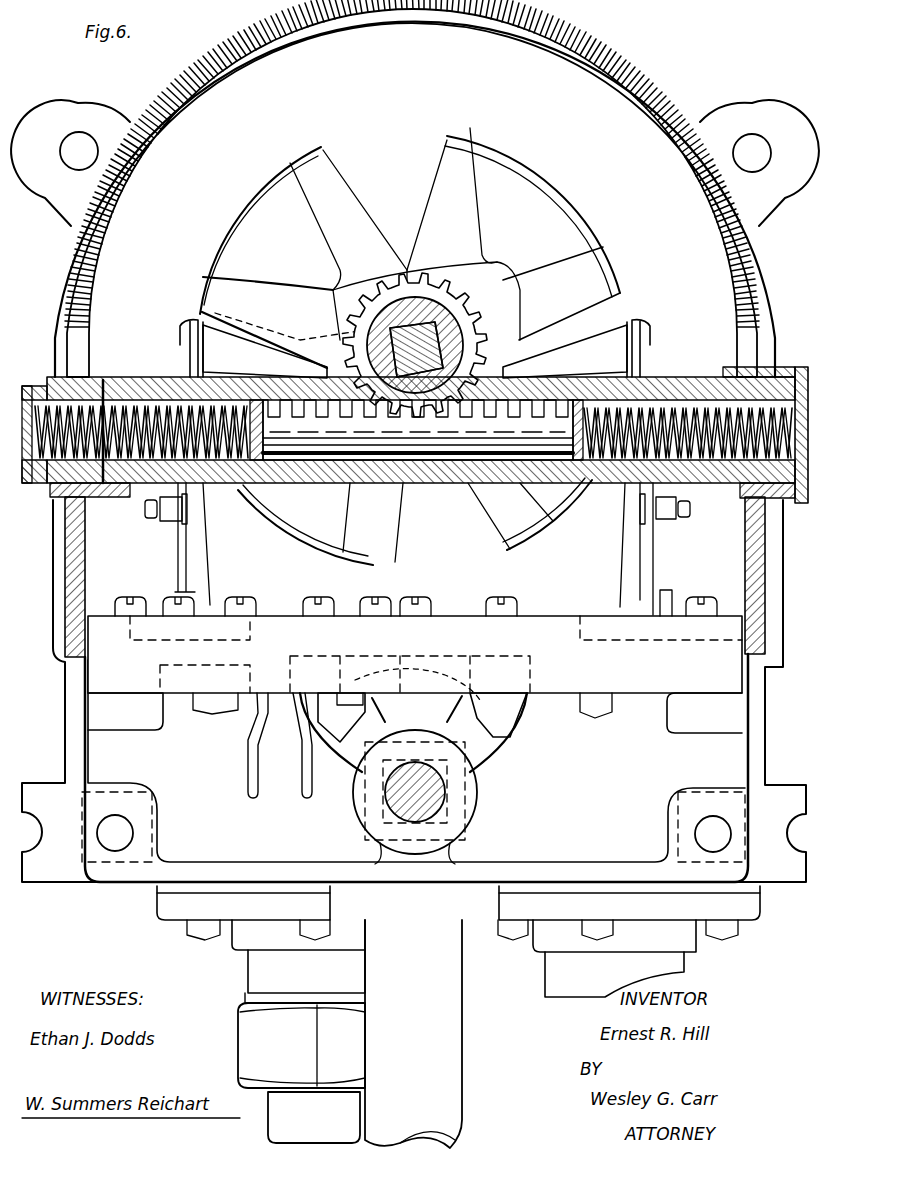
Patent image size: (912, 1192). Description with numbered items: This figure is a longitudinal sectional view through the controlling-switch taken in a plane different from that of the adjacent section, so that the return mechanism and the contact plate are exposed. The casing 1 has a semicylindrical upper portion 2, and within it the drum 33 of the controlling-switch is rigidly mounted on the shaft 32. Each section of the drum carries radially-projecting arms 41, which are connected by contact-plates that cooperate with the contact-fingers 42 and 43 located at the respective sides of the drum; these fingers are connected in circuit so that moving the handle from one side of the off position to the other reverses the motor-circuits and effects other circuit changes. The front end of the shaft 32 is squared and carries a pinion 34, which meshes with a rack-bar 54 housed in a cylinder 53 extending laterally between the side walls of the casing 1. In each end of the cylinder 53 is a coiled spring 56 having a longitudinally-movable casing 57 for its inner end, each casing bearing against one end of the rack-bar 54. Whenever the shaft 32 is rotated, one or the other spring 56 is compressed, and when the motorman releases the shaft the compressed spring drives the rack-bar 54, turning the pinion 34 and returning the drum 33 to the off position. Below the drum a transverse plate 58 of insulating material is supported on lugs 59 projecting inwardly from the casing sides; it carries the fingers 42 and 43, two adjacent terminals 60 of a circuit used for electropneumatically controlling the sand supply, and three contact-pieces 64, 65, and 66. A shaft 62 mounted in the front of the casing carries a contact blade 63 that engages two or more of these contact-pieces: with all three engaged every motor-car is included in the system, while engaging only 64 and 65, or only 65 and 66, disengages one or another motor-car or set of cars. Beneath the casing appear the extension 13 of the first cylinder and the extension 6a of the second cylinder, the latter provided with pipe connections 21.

The casing 1 is at (414, 815).
The semicylindrical upper portion 2 is at (415, 188).
The shaft 32 is at (406, 266).
The drum 33 is at (426, 301).
The pinion 34 is at (452, 322).
The radially-projecting arms 41 is at (410, 346).
The contact-finger 42 is at (238, 333).
The contact-finger 43 is at (587, 349).
The cylinder 53 is at (415, 438).
The rack-bar 54 is at (418, 430).
The coiled spring 56 is at (700, 382).
The longitudinally-movable casing 57 is at (150, 366).
The transverse plate 58 is at (415, 654).
The lugs 59 is at (415, 713).
The terminals 60 is at (302, 762).
The shaft 62 is at (447, 800).
The contact arm or blade 63 is at (413, 732).
The contact-piece 64 is at (341, 717).
The contact-piece 65 is at (417, 684).
The contact-piece 66 is at (498, 715).
The extension 6a is at (305, 976).
The extension 13 is at (614, 974).
The pipe connections 21 is at (301, 1073).